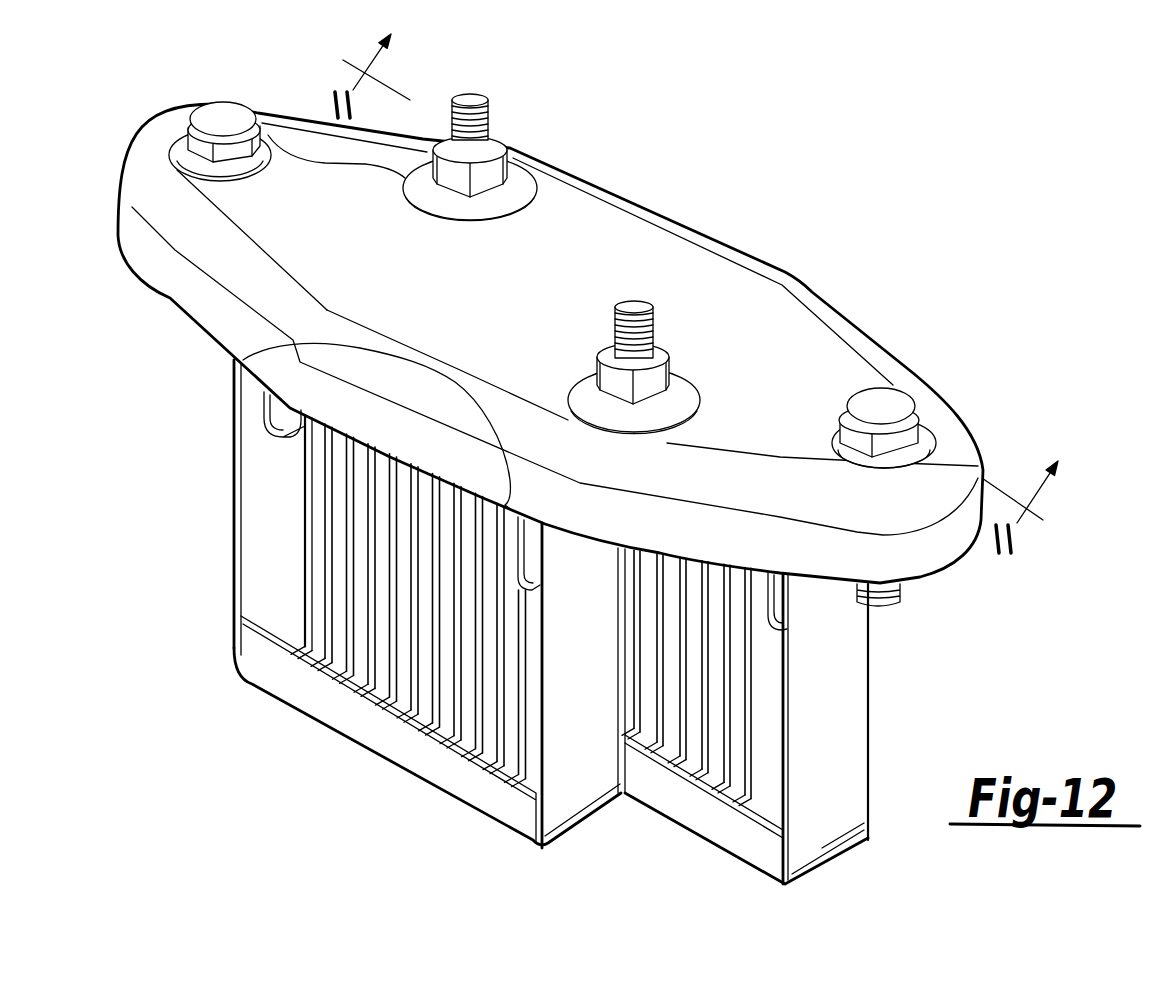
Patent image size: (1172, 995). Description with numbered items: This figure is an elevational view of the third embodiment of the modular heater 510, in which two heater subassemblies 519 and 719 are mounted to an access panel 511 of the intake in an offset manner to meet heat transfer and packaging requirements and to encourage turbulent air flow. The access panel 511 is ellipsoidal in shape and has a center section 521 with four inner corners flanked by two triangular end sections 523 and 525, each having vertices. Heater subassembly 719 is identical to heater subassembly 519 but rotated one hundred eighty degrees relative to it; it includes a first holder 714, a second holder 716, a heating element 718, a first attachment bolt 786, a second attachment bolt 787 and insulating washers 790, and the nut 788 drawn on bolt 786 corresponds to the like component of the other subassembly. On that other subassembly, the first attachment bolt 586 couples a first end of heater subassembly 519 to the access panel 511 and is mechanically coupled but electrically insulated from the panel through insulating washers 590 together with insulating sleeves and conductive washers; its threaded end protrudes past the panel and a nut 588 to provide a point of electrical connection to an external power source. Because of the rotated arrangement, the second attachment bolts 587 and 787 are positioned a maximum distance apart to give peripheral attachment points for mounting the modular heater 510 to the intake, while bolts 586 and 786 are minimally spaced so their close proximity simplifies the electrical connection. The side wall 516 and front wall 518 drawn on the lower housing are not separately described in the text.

The modular heater device 510 is at (575, 473).
The access panel 511 is at (550, 343).
The side wall 516 is at (877, 729).
The front wall with fins 518 is at (791, 717).
The heater subassembly 519 is at (770, 824).
The center section 521 is at (447, 354).
The triangular end section 523 is at (291, 222).
The triangular end section 525 is at (822, 420).
The first attachment bolt 586 is at (497, 91).
The second attachment bolt 587 is at (922, 473).
The nut 588 is at (496, 161).
The insulating washers 590 is at (227, 120).
The first holder 714 is at (327, 427).
The second holder 716 is at (590, 718).
The heating element 718 is at (349, 573).
The heater subassembly 719 is at (389, 730).
The first attachment bolt 786 is at (611, 301).
The second attachment bolt 787 is at (176, 128).
The nut 788 is at (654, 269).
The insulating washers 790 is at (740, 341).